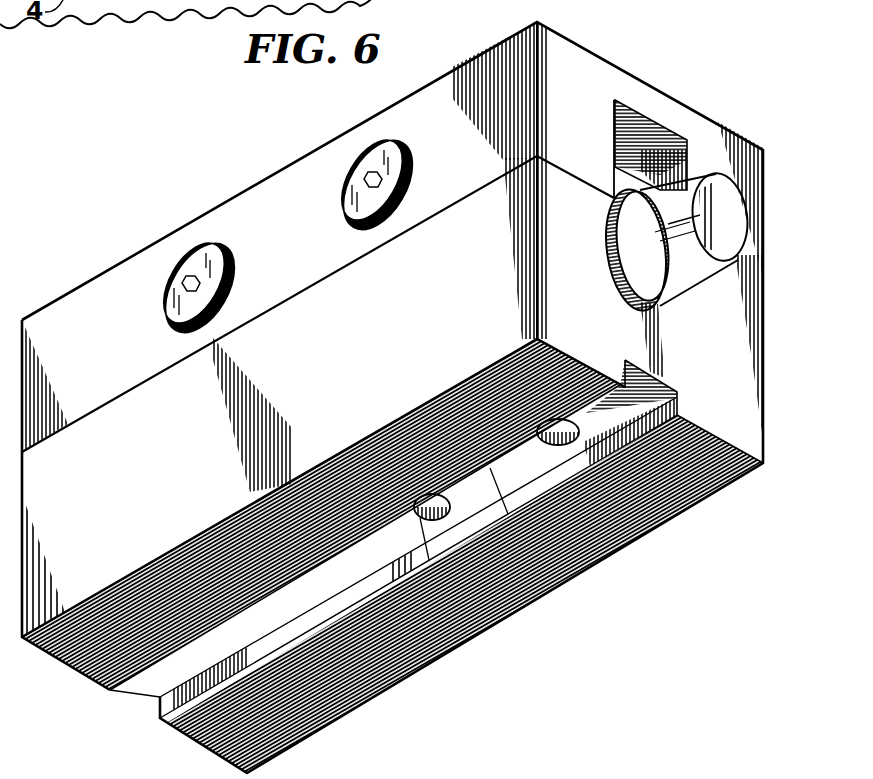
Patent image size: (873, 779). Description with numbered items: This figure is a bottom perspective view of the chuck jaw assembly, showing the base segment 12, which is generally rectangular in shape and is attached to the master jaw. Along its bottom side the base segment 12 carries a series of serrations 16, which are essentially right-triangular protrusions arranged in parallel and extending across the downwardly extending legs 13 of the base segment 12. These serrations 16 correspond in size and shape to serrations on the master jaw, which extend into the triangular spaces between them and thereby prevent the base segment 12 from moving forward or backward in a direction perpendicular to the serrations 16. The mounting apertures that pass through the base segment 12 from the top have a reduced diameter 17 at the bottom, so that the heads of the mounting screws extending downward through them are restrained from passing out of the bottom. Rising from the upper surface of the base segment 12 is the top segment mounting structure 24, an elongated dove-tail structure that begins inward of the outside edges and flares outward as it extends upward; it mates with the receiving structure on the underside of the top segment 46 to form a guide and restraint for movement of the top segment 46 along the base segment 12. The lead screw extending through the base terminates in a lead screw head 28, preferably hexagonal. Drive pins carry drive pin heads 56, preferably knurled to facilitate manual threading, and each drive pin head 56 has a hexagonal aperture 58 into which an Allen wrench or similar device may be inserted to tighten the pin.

The base segment 12 is at (720, 343).
The downwardly extending legs 13 is at (531, 310).
The serrations 16 is at (572, 582).
The reduced diameter 17 is at (662, 522).
The top segment mounting structure 24 is at (618, 176).
The lead screw head 28 is at (750, 199).
The top segment 46 is at (578, 74).
The drive pin head 56 is at (373, 150).
The hexagonal aperture 58 is at (364, 180).